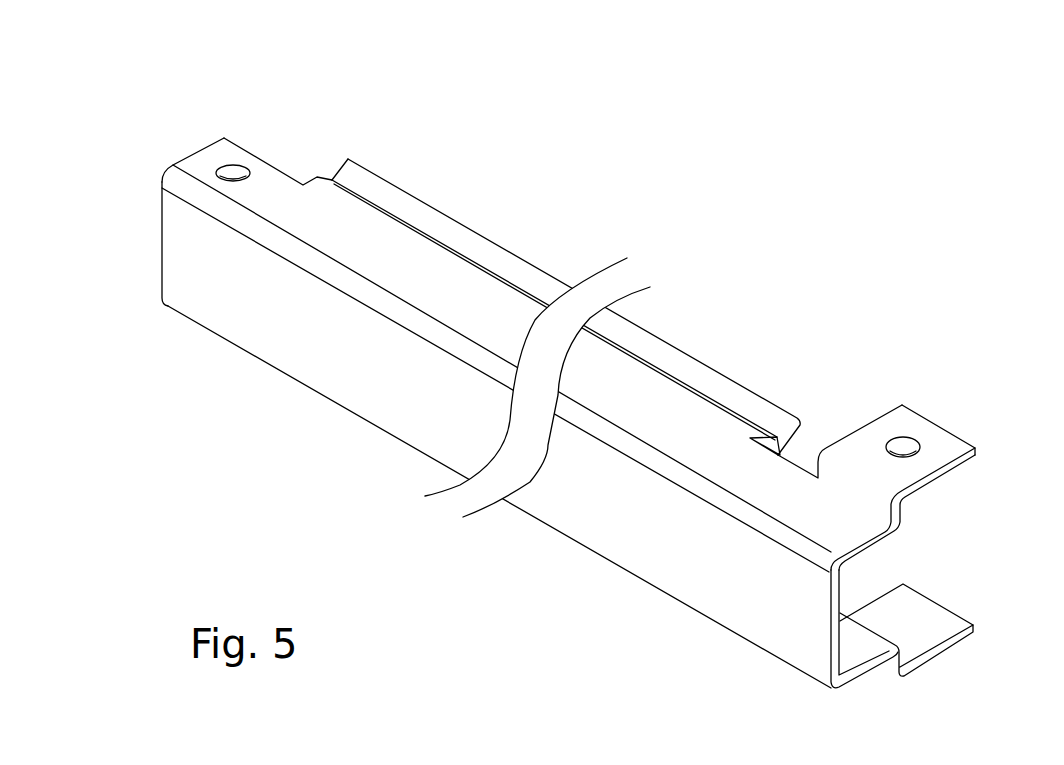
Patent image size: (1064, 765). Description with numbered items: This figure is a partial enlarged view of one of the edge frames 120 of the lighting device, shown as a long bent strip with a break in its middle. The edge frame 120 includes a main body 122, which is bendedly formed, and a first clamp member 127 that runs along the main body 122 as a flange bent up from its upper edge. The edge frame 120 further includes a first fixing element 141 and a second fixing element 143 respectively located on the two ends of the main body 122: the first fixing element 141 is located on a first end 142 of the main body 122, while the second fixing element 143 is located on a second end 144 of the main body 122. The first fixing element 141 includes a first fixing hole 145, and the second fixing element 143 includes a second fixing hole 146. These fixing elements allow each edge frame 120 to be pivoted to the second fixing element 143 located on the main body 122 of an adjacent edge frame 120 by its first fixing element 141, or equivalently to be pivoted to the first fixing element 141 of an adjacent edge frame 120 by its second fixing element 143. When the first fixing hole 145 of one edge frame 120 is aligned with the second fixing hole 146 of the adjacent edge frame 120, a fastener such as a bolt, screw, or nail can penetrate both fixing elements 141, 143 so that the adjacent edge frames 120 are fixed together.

The edge frame 120 is at (112, 122).
The main body 122 is at (567, 508).
The first clamp member 127 is at (692, 372).
The first fixing element 141 is at (898, 428).
The first end 142 is at (811, 616).
The second fixing element 143 is at (262, 172).
The second end 144 is at (187, 263).
The first fixing hole 145 is at (925, 446).
The second fixing hole 146 is at (236, 162).